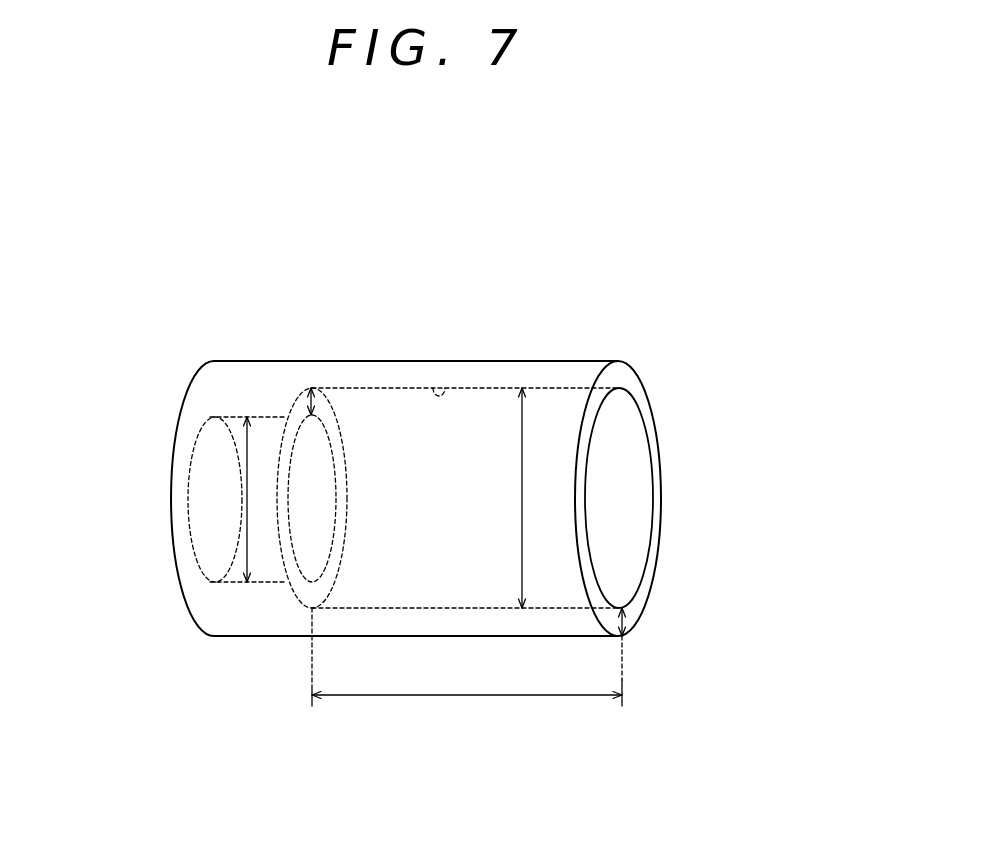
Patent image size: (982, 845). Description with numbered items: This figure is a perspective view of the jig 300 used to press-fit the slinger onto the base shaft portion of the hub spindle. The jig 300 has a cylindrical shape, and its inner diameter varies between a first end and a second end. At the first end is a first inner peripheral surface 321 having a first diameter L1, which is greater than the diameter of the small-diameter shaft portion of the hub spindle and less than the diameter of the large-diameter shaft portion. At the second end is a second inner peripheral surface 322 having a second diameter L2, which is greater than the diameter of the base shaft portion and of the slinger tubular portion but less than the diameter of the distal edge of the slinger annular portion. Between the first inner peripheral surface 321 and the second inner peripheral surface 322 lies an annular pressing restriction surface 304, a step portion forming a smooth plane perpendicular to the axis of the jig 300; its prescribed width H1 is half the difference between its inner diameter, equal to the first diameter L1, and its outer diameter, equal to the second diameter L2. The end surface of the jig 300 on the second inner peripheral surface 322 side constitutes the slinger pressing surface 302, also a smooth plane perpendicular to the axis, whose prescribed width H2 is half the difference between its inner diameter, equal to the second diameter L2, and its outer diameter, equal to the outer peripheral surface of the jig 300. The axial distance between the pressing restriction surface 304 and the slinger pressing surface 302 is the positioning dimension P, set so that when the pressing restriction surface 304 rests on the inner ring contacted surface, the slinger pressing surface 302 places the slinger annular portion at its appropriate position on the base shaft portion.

The jig 300 is at (582, 322).
The slinger pressing surface 302 is at (625, 376).
The pressing restriction surface 304 is at (312, 608).
The first inner peripheral surface 321 is at (206, 428).
The second inner peripheral surface 322 is at (433, 388).
The prescribed width of pressing restriction surface H1 is at (309, 393).
The prescribed width of slinger pressing surface H2 is at (625, 618).
The first diameter L1 is at (261, 499).
The second diameter L2 is at (538, 498).
The positioning dimension P is at (467, 657).